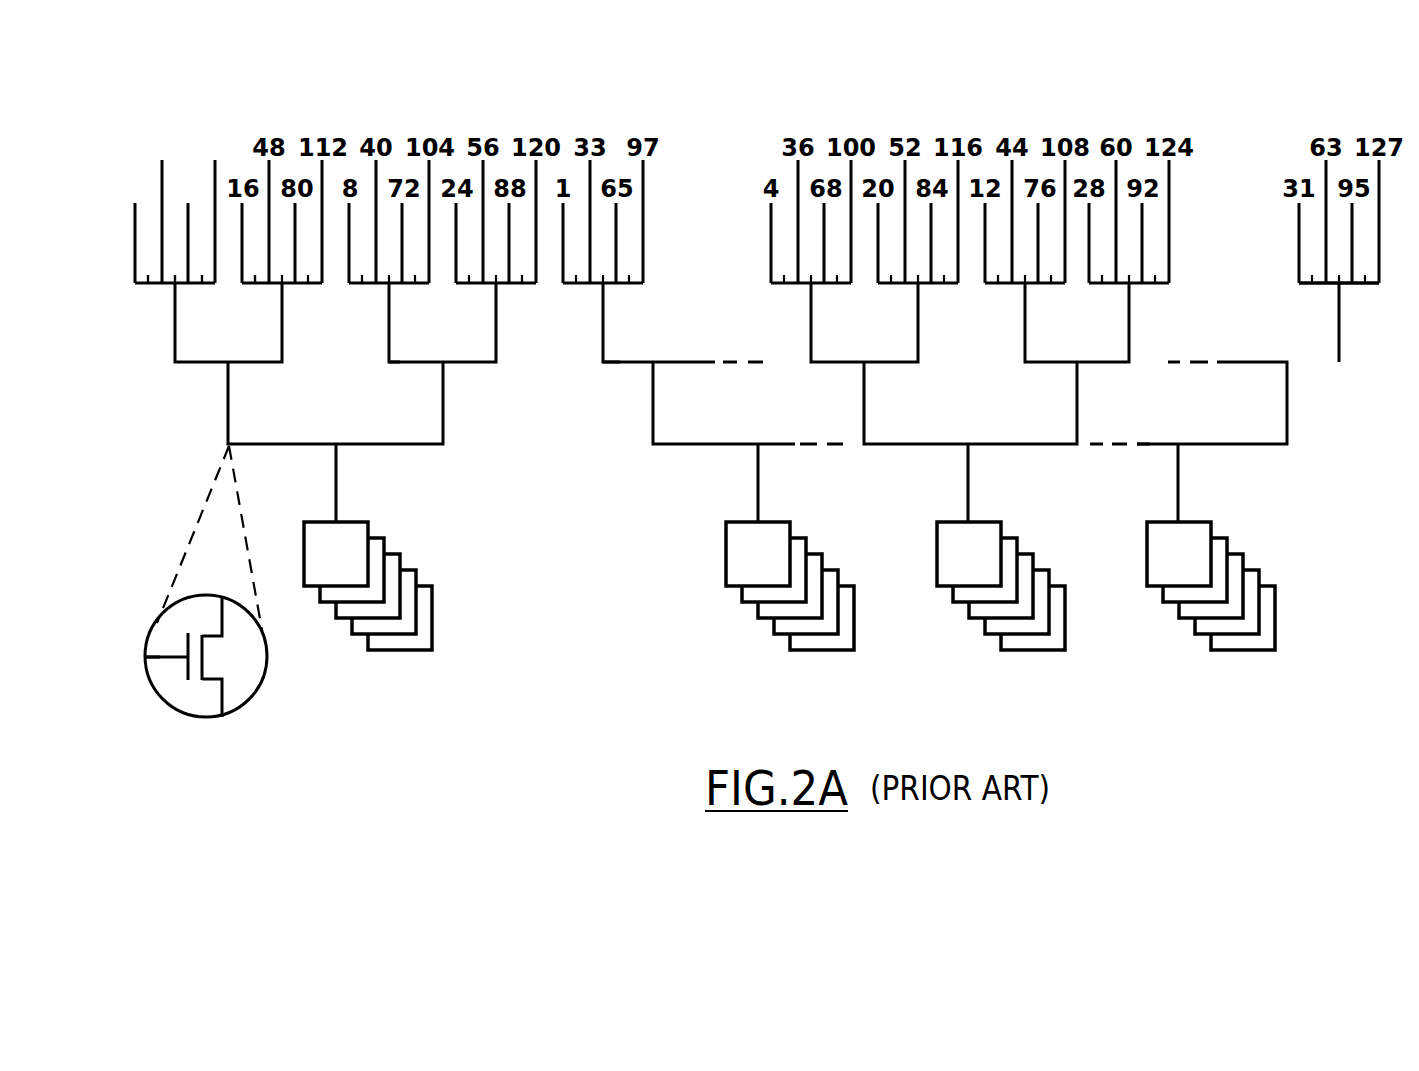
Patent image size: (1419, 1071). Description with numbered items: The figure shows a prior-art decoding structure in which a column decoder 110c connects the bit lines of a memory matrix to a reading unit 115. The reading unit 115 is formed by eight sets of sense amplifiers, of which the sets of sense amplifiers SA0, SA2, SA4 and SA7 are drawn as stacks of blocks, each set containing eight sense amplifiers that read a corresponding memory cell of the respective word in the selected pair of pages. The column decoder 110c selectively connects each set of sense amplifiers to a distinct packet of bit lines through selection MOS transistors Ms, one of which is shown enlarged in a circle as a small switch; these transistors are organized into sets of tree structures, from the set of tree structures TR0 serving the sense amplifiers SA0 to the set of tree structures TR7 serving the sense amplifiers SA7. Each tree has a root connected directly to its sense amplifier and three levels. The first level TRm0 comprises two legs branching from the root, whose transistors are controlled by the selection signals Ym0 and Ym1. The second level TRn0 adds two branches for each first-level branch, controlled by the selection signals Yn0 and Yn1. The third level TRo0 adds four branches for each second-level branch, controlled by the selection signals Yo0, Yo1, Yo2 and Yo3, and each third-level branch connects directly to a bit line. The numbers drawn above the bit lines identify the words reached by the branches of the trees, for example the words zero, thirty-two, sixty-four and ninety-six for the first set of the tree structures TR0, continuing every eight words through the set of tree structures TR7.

The reading unit 115 is at (1221, 589).
The column decoder 110c is at (1345, 360).
The set of sense amplifiers SA0 is at (303, 537).
The set of sense amplifiers SA2 is at (725, 562).
The set of sense amplifiers SA4 is at (937, 560).
The set of sense amplifiers SA7 is at (1147, 558).
The set of tree structures TR0 is at (442, 512).
The set of tree structures TR7 is at (1255, 298).
The third level of tree TRo0 is at (149, 208).
The second level of tree TRn0 is at (125, 340).
The first level of tree TRm0 is at (205, 392).
The selection MOS transistor Ms is at (207, 653).
The selection signal Ym0 is at (170, 656).
The selection signal Ym1 is at (840, 433).
The selection signal Yn0 is at (588, 369).
The selection signal Yn1 is at (268, 360).
The selection signal Yo0 is at (1306, 276).
The selection signal Yo1 is at (147, 281).
The selection signal Yo2 is at (167, 284).
The selection signal Yo3 is at (203, 284).